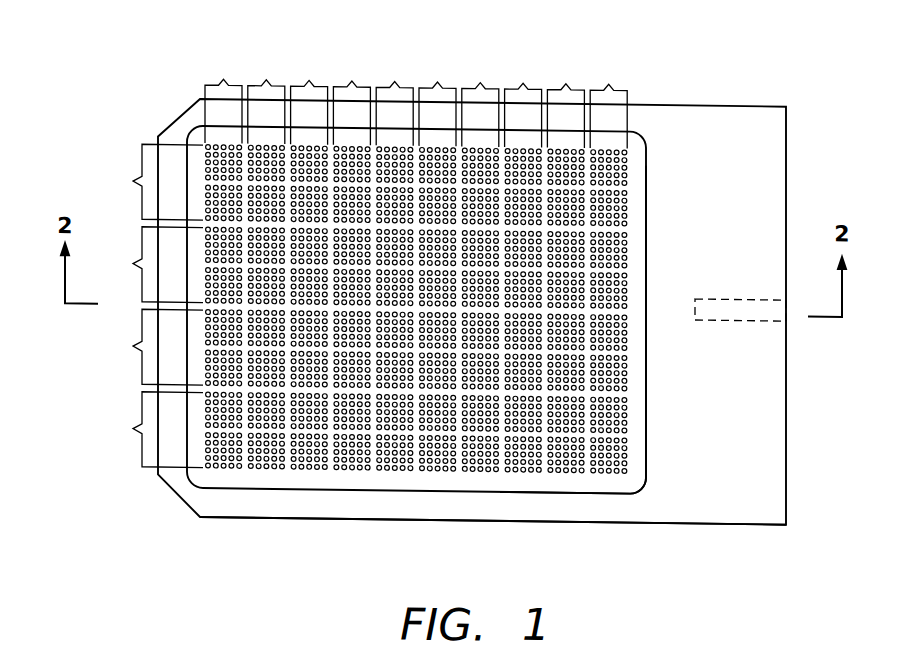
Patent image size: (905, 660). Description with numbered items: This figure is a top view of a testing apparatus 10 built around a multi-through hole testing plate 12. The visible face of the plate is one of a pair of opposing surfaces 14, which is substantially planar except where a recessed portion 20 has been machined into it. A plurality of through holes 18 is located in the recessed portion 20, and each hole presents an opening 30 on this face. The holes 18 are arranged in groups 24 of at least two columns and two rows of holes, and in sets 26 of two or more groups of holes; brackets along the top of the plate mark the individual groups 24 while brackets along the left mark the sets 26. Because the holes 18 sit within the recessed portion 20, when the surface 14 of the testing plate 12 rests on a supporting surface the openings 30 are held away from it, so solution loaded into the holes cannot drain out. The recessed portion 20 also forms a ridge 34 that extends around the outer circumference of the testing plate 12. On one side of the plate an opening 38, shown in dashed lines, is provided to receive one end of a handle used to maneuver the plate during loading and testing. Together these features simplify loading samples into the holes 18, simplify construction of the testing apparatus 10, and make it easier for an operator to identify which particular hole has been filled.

The testing apparatus 10 is at (130, 93).
The testing plate 12 is at (707, 116).
The opposing surface 14 is at (637, 125).
The through holes 18 is at (650, 197).
The recessed portion 20 is at (635, 459).
The groups of holes 24 is at (416, 102).
The sets of holes 26 is at (151, 306).
The openings 30 is at (648, 376).
The ridge 34 is at (262, 507).
The opening 38 is at (712, 292).